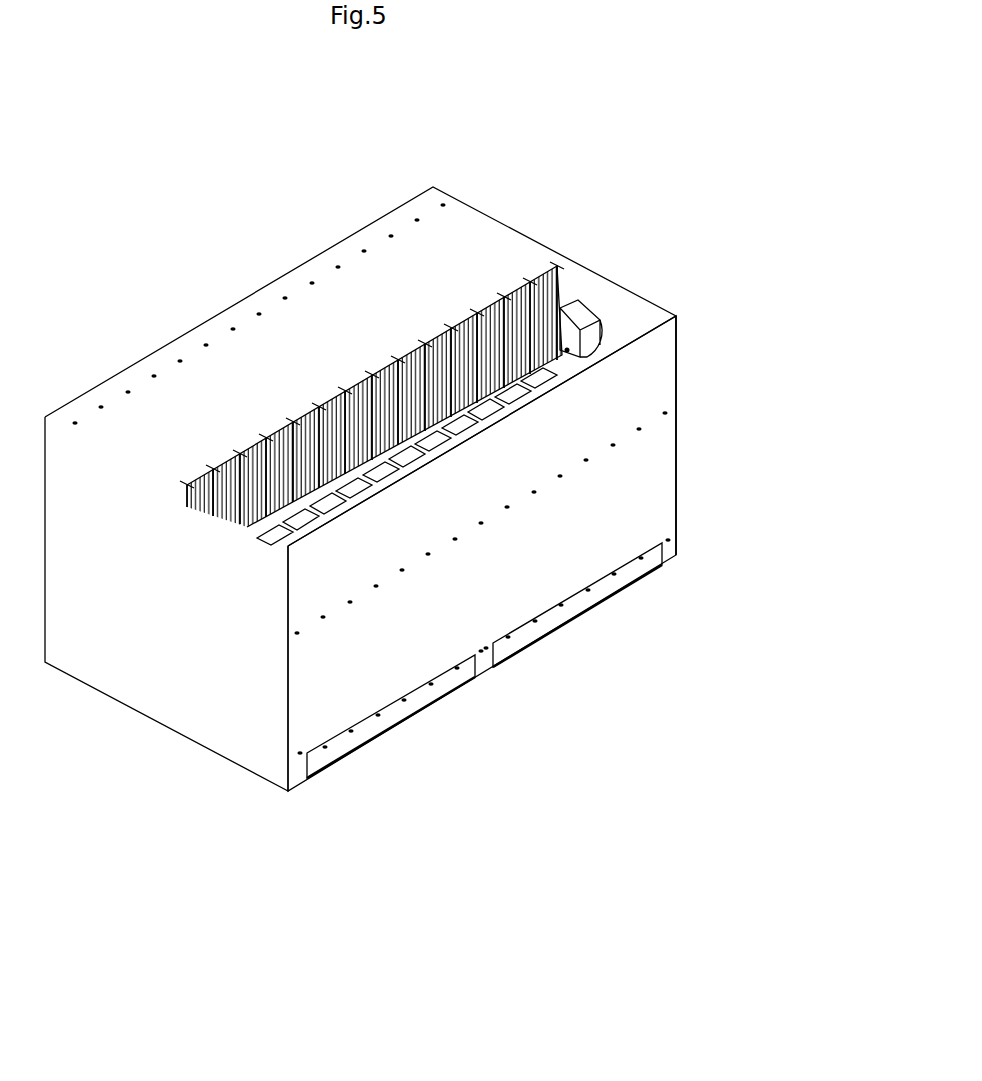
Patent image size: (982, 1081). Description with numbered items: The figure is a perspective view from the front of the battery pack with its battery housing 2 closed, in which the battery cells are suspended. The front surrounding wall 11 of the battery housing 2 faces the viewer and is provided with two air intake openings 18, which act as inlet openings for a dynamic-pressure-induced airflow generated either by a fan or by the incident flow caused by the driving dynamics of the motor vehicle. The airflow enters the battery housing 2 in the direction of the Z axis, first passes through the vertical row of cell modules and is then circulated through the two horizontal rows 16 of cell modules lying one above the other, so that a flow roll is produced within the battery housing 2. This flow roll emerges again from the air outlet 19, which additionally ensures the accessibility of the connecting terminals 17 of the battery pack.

The battery housing 2 is at (574, 264).
The front surrounding wall 11 is at (773, 420).
The horizontal rows 16 is at (618, 378).
The connecting terminals 17 is at (695, 345).
The air intake openings 18 is at (687, 697).
The air outlet 19 is at (761, 342).